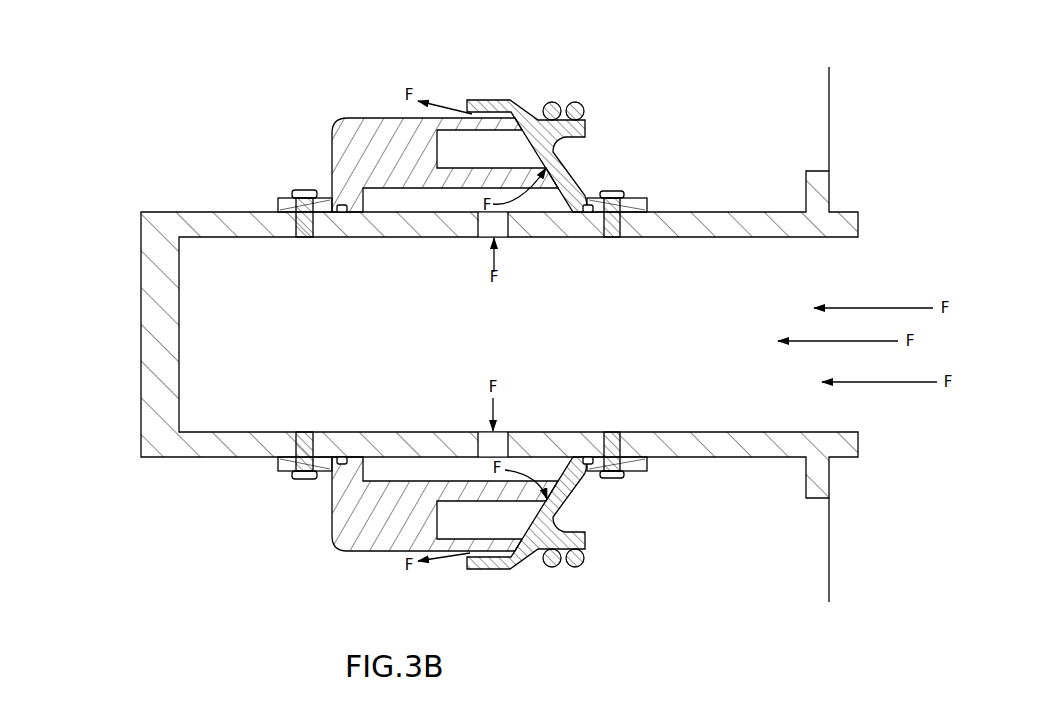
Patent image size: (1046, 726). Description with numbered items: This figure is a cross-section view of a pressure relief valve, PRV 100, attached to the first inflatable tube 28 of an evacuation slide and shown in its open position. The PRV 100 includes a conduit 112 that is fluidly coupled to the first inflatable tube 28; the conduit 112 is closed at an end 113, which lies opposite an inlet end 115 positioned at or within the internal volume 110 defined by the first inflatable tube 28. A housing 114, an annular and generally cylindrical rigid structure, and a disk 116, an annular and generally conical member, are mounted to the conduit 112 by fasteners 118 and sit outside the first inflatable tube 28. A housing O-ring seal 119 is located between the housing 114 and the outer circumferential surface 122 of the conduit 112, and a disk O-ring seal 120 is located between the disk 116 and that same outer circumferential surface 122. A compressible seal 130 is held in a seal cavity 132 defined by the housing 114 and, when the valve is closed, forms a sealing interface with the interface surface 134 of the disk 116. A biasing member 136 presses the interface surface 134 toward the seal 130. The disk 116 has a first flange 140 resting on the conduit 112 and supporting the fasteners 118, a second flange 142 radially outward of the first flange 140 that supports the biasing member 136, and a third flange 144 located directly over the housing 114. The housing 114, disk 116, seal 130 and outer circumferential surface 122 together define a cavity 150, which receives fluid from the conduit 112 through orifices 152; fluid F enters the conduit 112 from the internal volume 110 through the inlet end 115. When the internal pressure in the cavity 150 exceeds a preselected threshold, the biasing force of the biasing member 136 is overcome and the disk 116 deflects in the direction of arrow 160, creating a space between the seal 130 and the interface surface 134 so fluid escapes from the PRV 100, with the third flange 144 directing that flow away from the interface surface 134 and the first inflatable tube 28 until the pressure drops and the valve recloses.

The PRV 100 is at (110, 76).
The internal volume 110 is at (867, 139).
The conduit 112 is at (197, 447).
The end 113 is at (143, 357).
The housing 114 is at (357, 140).
The inlet end 115 is at (860, 444).
The disk 116 is at (572, 177).
The fasteners 118 is at (304, 216).
The housing O-ring seal 119 is at (341, 456).
The disk O-ring seal 120 is at (589, 456).
The outer circumferential surface 122 is at (749, 212).
The seal 130 is at (463, 160).
The seal cavity 132 is at (433, 128).
The interface surface 134 is at (508, 558).
The biasing member 136 is at (573, 101).
The first flange 140 is at (638, 462).
The second flange 142 is at (579, 549).
The third flange 144 is at (476, 567).
The cavity 150 is at (536, 207).
The orifices 152 is at (487, 238).
The arrow 160 is at (668, 146).
The first inflatable tube 28 is at (829, 83).